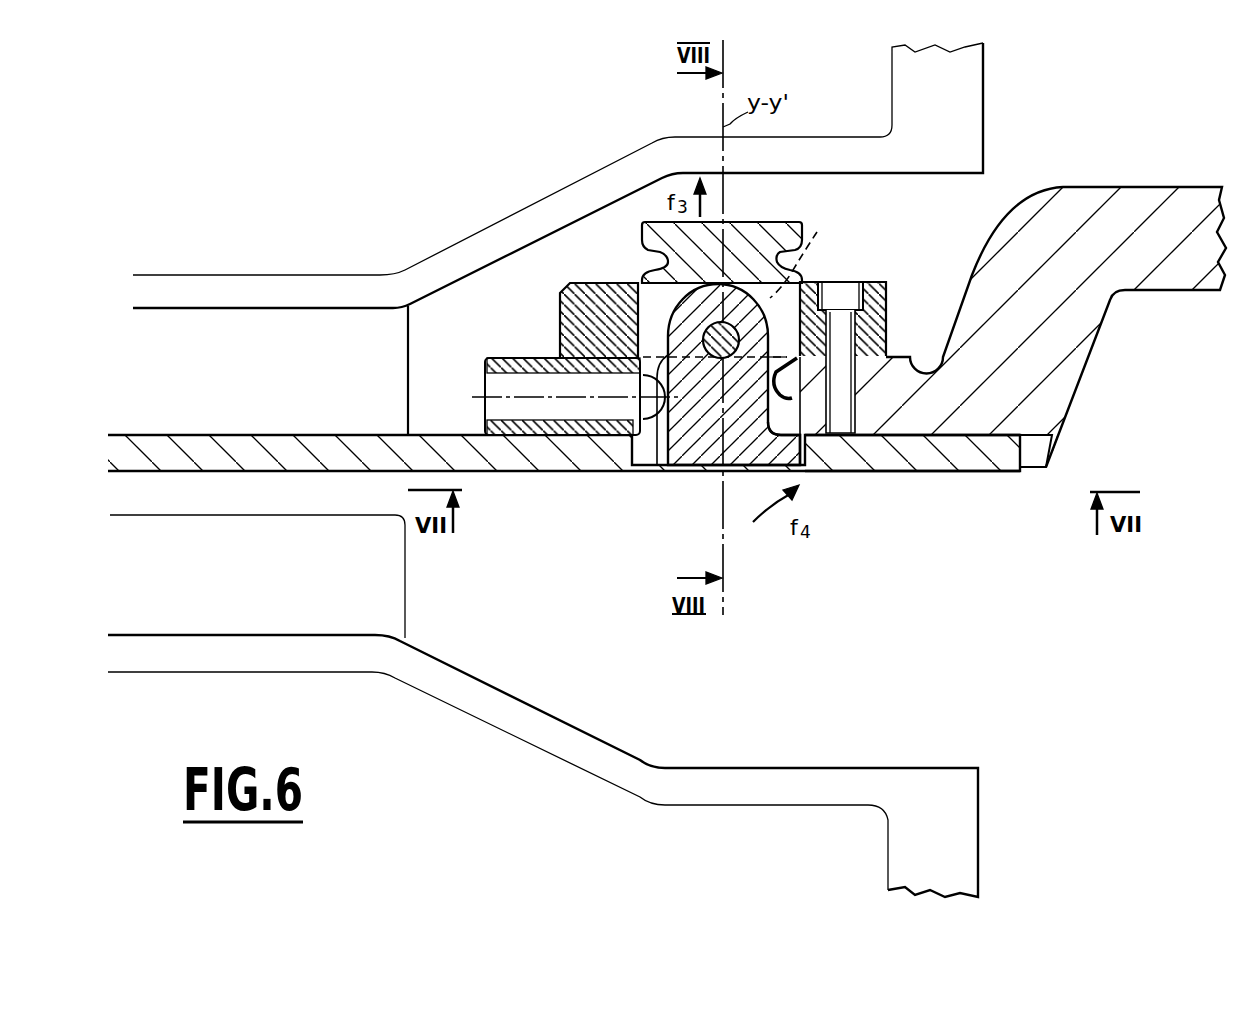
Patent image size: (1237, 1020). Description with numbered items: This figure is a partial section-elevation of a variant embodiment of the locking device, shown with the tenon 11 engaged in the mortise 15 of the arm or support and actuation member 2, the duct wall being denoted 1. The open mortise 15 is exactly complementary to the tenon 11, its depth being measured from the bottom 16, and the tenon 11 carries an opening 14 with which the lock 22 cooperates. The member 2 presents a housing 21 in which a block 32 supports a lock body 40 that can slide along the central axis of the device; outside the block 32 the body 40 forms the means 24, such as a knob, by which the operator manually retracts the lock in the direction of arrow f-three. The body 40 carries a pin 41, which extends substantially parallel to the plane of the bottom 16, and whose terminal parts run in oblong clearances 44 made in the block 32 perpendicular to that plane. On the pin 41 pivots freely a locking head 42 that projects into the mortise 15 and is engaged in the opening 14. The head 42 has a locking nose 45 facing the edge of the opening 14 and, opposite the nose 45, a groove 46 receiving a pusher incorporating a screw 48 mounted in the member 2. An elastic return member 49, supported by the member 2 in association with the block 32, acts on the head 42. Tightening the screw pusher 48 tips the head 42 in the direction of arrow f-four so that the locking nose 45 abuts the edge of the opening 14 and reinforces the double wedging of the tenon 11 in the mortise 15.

The duct wall 1 is at (240, 470).
The support and actuation member 2 is at (1105, 195).
The tenon 11 is at (960, 457).
The opening 14 is at (632, 452).
The mortise 15 is at (1045, 452).
The bottom 16 is at (1018, 425).
The housing 21 is at (808, 412).
The lock 22 is at (699, 412).
The means 24 is at (748, 228).
The block 32 is at (880, 282).
The lock body 40 is at (783, 300).
The pin 41 is at (706, 293).
The locking head 42 is at (737, 455).
The oblong clearances 44 is at (807, 252).
The locking nose 45 is at (807, 457).
The groove 46 is at (660, 463).
The screw 48 is at (520, 382).
The elastic return member 49 is at (781, 335).